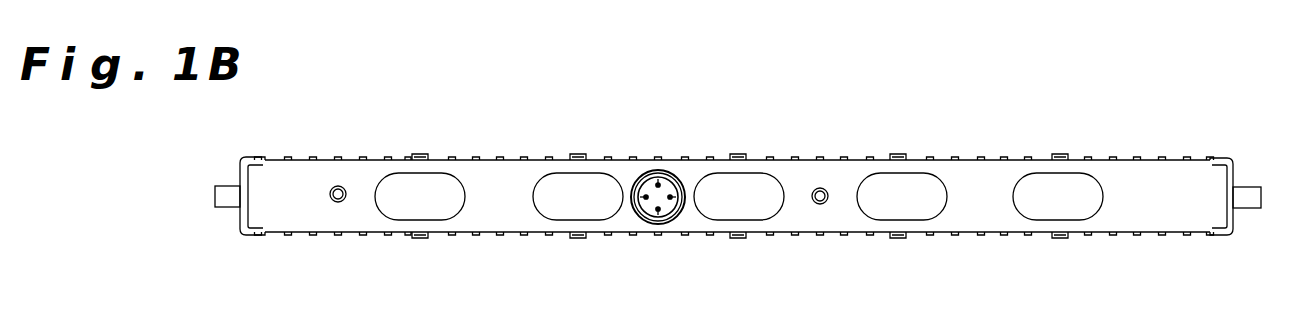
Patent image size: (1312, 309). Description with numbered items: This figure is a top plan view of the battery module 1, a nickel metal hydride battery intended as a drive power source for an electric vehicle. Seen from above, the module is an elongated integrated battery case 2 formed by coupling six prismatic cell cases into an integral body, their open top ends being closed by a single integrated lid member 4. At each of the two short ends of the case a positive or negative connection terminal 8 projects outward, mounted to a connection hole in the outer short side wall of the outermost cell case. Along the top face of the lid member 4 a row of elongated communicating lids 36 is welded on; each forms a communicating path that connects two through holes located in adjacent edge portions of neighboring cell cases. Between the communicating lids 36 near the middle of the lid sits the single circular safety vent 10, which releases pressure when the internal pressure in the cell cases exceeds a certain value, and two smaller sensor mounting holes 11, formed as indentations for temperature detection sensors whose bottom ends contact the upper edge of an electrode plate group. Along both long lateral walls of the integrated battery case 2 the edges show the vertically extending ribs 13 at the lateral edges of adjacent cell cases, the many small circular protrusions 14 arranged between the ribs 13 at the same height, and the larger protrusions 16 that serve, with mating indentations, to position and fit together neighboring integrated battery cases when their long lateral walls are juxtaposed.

The battery module 1 is at (258, 140).
The integrated battery case 2 is at (223, 221).
The lid member 4 is at (273, 218).
The connection terminal 8 is at (217, 197).
The safety vent 10 is at (664, 189).
The sensor mounting hole 11 is at (336, 186).
The ribs 13 is at (409, 157).
The protrusions 14 is at (340, 157).
The protrusions 16 is at (424, 154).
The communicating lids 36 is at (441, 198).